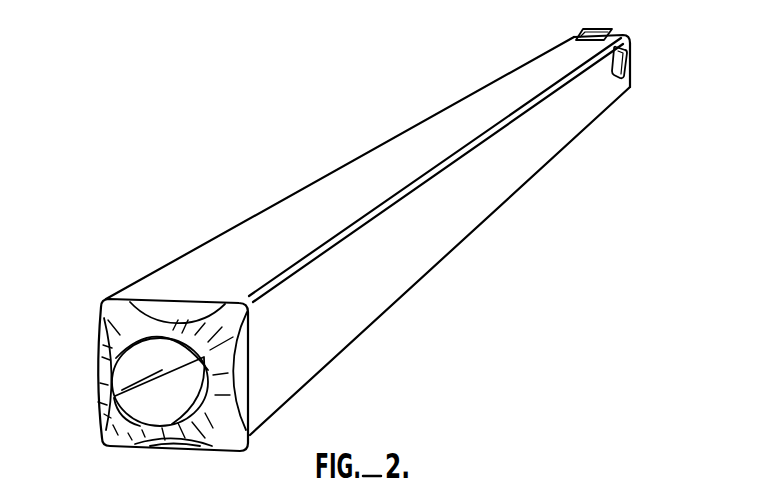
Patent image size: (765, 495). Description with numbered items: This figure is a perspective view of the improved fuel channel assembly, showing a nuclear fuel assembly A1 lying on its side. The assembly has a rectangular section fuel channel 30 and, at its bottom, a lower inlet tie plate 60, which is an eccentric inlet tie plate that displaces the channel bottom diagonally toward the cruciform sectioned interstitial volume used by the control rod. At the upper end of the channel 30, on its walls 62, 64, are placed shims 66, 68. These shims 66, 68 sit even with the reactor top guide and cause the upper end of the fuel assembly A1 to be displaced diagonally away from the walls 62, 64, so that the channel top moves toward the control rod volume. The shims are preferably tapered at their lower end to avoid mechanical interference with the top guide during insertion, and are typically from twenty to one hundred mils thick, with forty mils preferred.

The fuel channel 30 is at (452, 222).
The lower inlet tie plate 60 is at (84, 393).
The wall 62 is at (568, 70).
The wall 64 is at (597, 101).
The shim 66 is at (605, 31).
The shim 68 is at (627, 63).
The nuclear fuel assembly A1 is at (428, 152).